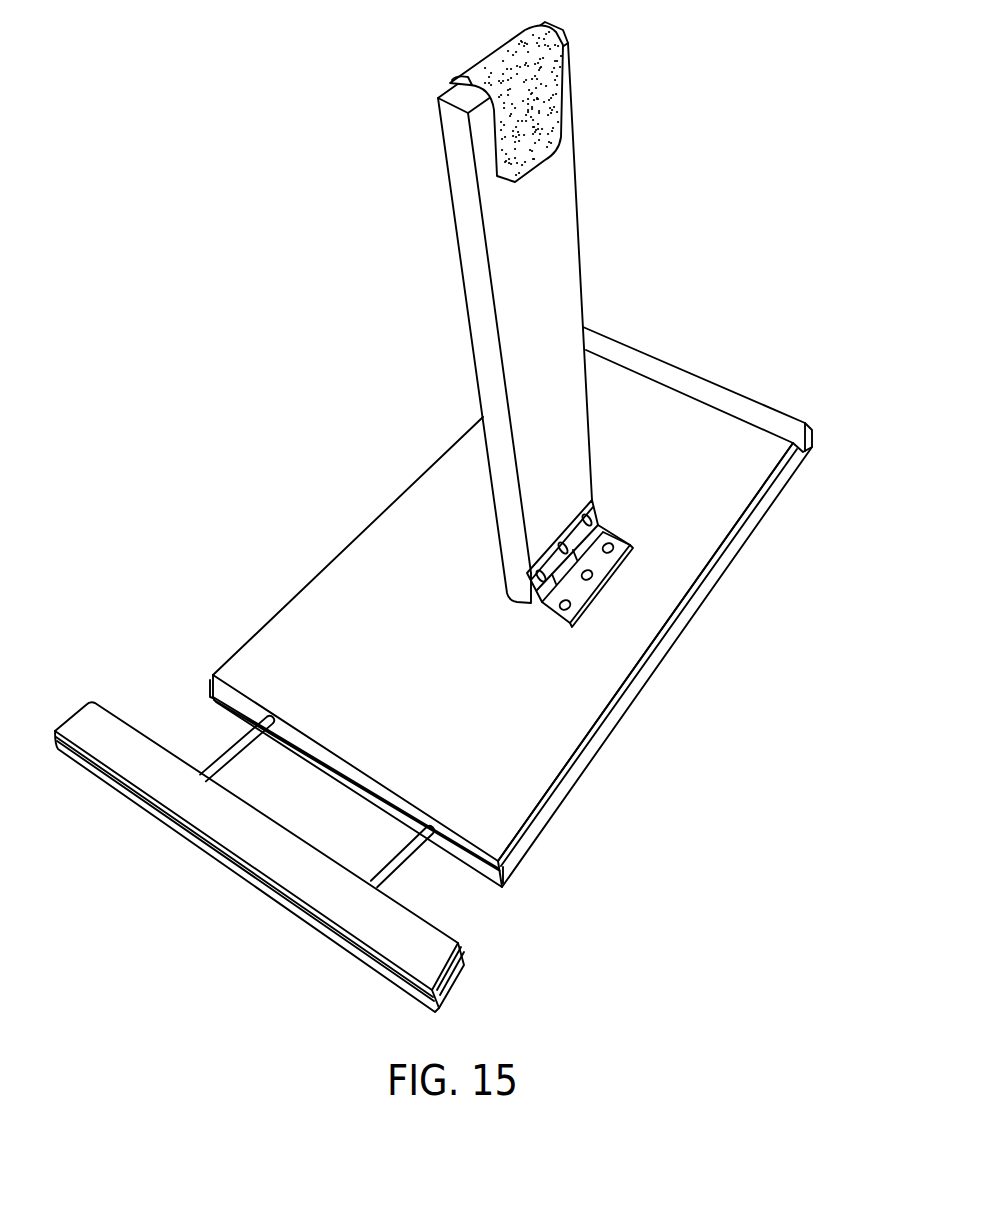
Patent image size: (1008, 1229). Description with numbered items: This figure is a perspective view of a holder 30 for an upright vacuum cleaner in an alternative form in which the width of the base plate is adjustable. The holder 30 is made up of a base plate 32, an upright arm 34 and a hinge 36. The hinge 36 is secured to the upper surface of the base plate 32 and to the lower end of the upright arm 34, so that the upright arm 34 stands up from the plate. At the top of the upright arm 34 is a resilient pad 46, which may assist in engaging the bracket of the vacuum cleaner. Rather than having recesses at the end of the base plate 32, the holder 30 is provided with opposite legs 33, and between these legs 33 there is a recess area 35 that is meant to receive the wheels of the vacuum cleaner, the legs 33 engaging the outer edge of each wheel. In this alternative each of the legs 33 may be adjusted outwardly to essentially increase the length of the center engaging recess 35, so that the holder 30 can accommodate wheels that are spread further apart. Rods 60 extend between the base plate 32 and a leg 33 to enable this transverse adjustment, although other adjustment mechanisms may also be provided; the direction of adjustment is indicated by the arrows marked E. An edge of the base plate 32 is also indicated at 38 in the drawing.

The holder 30 is at (546, 607).
The base plate 32 is at (450, 686).
The legs 33 is at (703, 383).
The upright arm 34 is at (570, 258).
The recess area 35 is at (365, 510).
The hinge 36 is at (585, 592).
The base edge 38 is at (593, 755).
The resilient pad 46 is at (507, 47).
The rods 60 is at (257, 737).